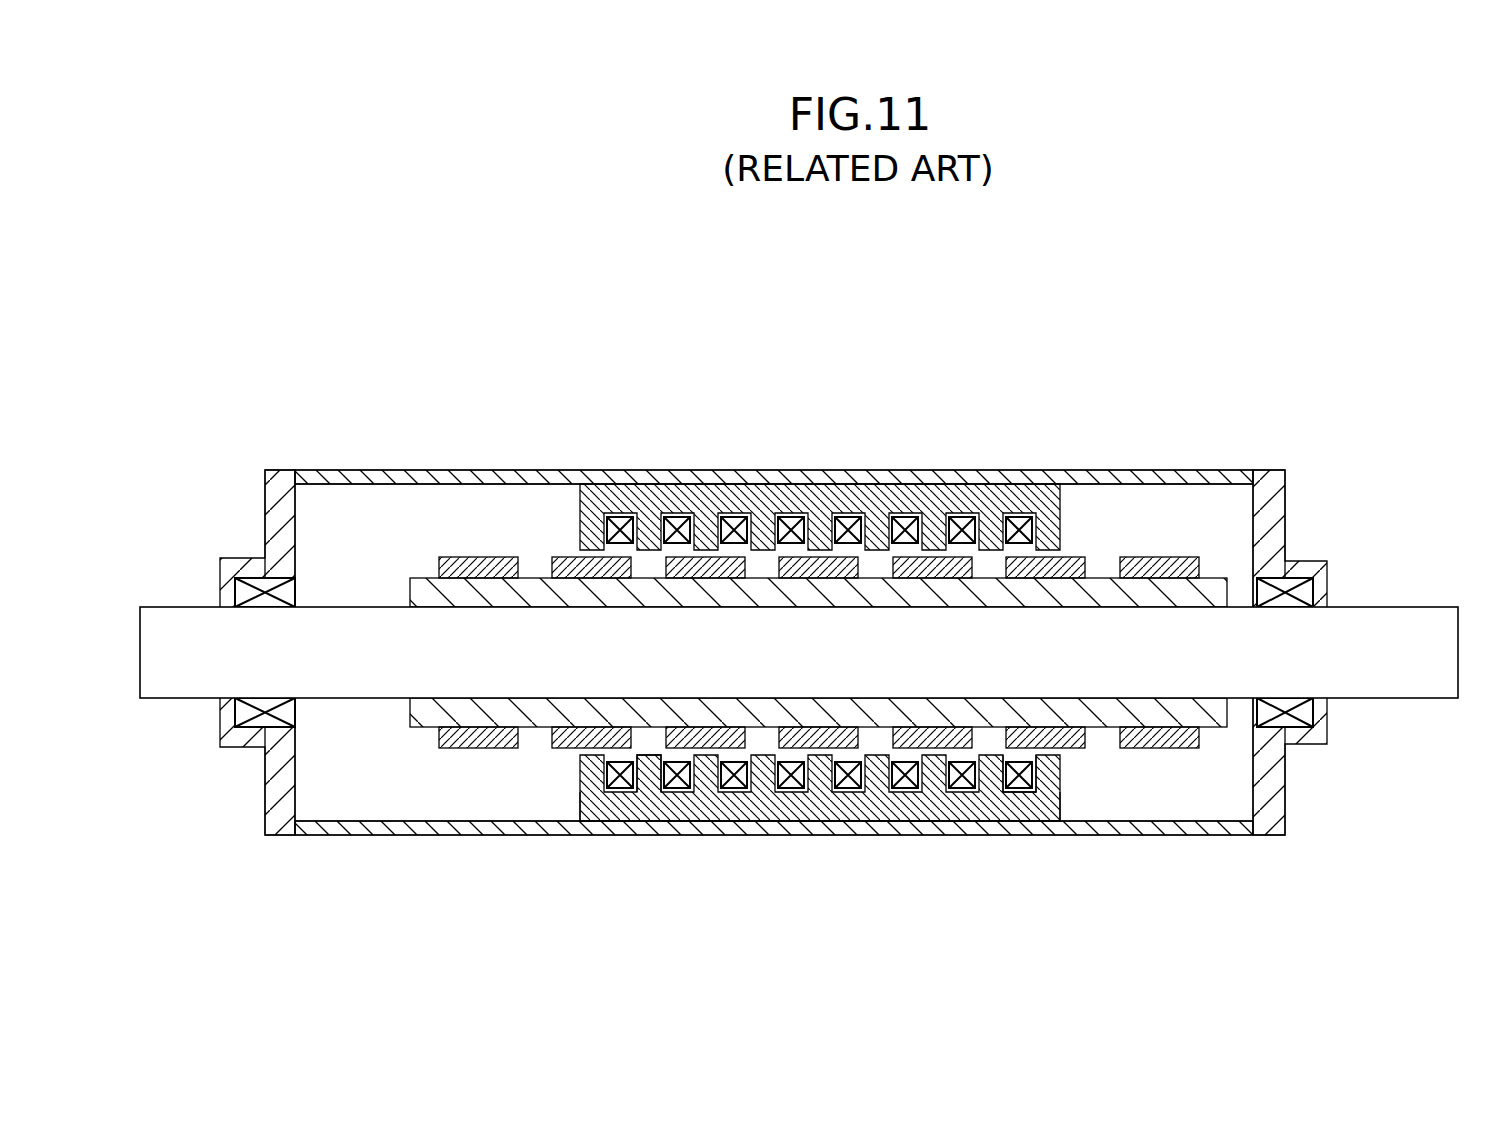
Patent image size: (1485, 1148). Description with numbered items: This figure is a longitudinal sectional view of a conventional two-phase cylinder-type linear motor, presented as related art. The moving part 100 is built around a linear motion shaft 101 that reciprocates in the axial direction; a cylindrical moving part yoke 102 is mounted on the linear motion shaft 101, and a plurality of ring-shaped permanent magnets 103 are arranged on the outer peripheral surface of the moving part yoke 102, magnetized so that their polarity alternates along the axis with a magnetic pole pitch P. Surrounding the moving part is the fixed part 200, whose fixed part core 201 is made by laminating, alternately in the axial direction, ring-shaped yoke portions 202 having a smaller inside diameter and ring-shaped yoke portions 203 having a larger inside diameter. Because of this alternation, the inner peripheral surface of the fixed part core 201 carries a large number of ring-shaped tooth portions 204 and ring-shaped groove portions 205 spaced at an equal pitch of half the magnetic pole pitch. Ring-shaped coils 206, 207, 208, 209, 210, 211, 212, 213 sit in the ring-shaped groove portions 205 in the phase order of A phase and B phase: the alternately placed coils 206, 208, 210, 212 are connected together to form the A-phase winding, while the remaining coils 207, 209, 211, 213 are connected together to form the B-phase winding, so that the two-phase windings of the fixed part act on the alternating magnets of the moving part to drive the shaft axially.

The moving part 100 is at (774, 659).
The linear motion shaft 101 is at (377, 700).
The moving part yoke 102 is at (532, 727).
The permanent magnet 103 is at (1175, 750).
The fixed part 200 is at (783, 439).
The fixed part core 201 is at (825, 844).
The ring-shaped yoke portion 202 is at (982, 760).
The ring-shaped yoke portion 203 is at (1027, 793).
The ring-shaped tooth portion 204 is at (650, 775).
The ring-shaped groove portion 205 is at (620, 790).
The ring-shaped coil 206 is at (620, 527).
The ring-shaped coil 207 is at (677, 523).
The ring-shaped coil 208 is at (734, 523).
The ring-shaped coil 209 is at (791, 523).
The ring-shaped coil 210 is at (848, 523).
The ring-shaped coil 211 is at (905, 523).
The ring-shaped coil 212 is at (962, 523).
The ring-shaped coil 213 is at (1019, 523).